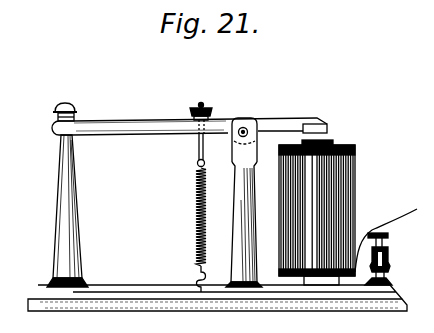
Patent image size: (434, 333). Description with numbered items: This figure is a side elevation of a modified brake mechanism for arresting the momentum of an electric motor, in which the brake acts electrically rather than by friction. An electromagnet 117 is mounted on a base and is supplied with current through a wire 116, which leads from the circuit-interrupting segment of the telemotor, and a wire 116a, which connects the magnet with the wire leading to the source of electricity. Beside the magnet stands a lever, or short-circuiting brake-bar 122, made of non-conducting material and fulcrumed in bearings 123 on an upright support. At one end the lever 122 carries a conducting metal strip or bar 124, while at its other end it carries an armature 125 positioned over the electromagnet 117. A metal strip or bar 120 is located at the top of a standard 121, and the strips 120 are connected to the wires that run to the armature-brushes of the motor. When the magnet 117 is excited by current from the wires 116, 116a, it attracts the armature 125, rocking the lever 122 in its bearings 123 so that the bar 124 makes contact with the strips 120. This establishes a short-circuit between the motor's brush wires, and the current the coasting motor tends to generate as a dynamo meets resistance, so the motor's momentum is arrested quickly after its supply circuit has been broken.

The wire 116 is at (284, 277).
The wire 116a is at (391, 247).
The electromagnet 117 is at (354, 213).
The metal strips or bars 120 is at (65, 103).
The standards 121 is at (53, 211).
The lever or short-circuiting brake-bar 122 is at (189, 121).
The bearings 123 is at (242, 202).
The conducting metal strip or bar 124 is at (76, 119).
The armature 125 is at (329, 127).